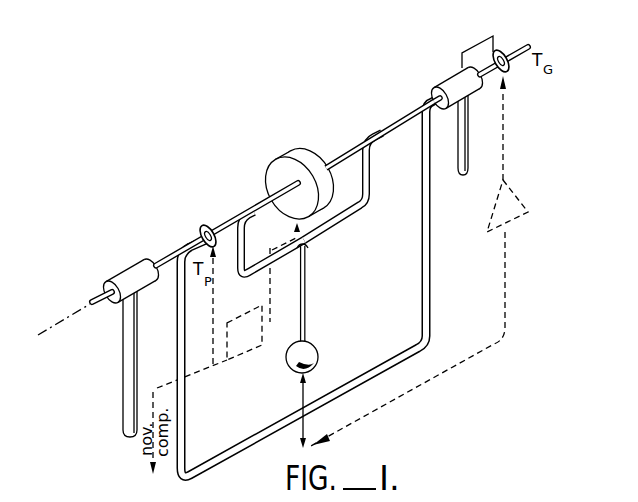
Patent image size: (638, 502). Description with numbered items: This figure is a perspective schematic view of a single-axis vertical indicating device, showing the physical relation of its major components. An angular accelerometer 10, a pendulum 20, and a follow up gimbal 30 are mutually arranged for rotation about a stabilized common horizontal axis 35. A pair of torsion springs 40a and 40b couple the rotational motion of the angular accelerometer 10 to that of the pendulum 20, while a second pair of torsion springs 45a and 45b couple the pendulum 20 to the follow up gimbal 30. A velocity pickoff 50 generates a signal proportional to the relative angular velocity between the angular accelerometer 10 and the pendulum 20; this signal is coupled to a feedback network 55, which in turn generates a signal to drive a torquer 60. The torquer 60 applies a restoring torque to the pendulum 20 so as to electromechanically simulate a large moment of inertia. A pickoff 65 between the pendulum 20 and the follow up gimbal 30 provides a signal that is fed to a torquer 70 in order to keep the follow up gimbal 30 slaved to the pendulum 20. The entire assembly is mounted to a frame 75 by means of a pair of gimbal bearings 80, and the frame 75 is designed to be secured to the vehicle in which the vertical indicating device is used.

The angular accelerometer 10 is at (282, 170).
The pendulum 20 is at (318, 346).
The follow up gimbal 30 is at (432, 249).
The stabilized common horizontal axis 35 is at (77, 308).
The torsion spring 40a is at (266, 208).
The torsion spring 40b is at (350, 152).
The torsion spring 45a is at (203, 240).
The torsion spring 45b is at (392, 125).
The velocity pickoff 50 is at (304, 224).
The feedback network 55 is at (244, 358).
The torquer 60 is at (207, 225).
The pickoff 65 is at (298, 391).
The torquer 70 is at (504, 50).
The frame 75 is at (123, 393).
The gimbal bearings 80 is at (116, 305).